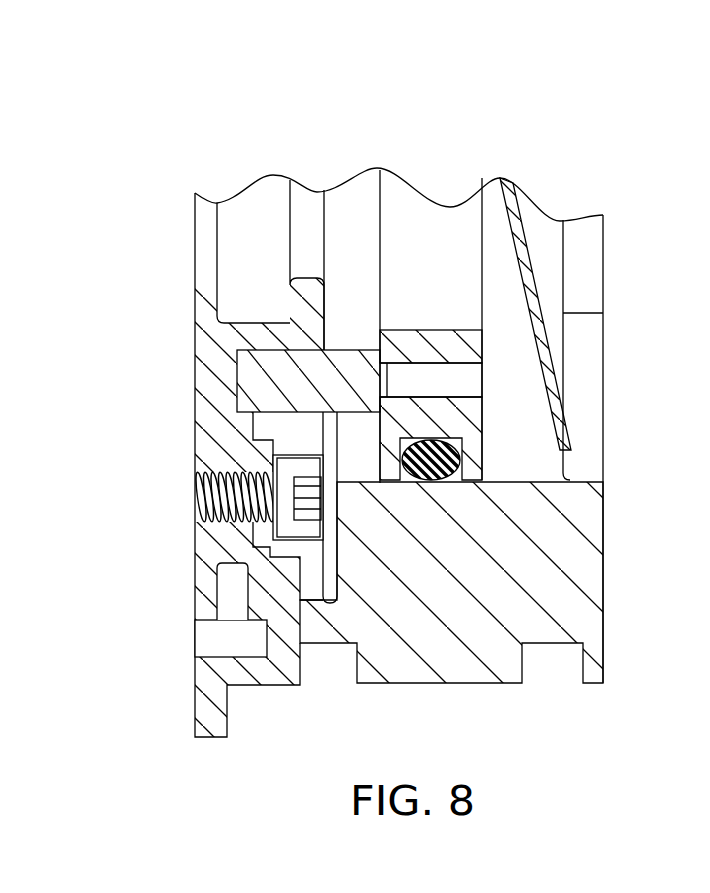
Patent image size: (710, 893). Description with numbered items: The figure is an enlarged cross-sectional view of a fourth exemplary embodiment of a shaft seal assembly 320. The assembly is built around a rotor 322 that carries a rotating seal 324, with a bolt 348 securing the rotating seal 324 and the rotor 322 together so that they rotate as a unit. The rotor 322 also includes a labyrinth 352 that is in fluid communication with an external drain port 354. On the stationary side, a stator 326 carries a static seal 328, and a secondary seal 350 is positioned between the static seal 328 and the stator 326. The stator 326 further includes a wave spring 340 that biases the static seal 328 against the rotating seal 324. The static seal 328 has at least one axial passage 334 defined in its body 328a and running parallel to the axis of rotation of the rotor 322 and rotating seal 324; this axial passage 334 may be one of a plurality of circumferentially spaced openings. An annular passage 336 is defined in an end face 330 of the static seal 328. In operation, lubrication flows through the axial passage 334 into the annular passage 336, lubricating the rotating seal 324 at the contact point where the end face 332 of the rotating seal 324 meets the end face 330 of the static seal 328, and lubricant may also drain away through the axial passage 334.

The shaft seal assembly 320 is at (610, 115).
The rotor 322 is at (225, 295).
The rotating seal 324 is at (253, 375).
The stator 326 is at (594, 576).
The static seal 328 is at (482, 268).
The body 328a is at (460, 232).
The end face 330 is at (384, 288).
The end face 332 is at (377, 337).
The axial passage 334 is at (473, 382).
The annular passage 336 is at (468, 362).
The wave spring 340 is at (547, 333).
The bolt 348 is at (208, 503).
The secondary seal 350 is at (450, 452).
The labyrinth 352 is at (232, 592).
The external drain port 354 is at (218, 640).